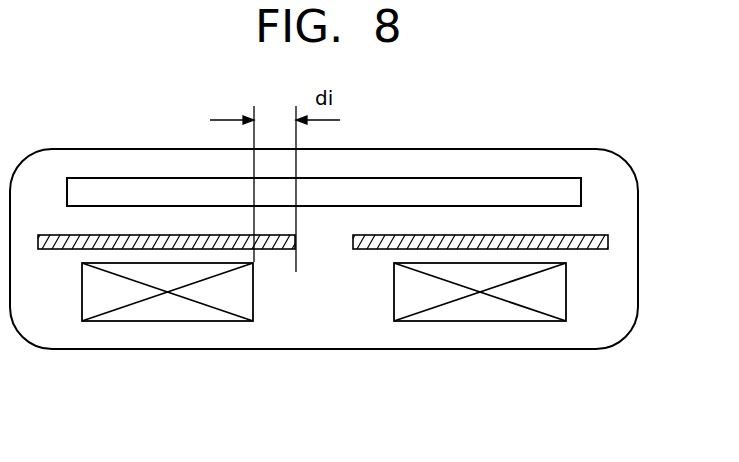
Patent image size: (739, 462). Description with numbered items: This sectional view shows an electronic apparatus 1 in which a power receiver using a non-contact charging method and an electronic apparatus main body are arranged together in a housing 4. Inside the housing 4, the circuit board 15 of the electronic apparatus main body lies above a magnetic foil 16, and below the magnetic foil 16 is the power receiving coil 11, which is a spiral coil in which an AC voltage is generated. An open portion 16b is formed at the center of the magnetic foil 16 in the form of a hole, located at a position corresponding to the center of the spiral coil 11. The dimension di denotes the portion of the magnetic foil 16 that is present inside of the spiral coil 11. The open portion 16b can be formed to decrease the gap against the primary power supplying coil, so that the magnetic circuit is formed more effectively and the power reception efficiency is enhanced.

The electronic apparatus 1 is at (620, 123).
The housing 4 is at (532, 350).
The power receiving coil 11 is at (567, 293).
The circuit board 15 is at (507, 177).
The magnetic foil 16 is at (608, 242).
The open portion 16b is at (325, 243).